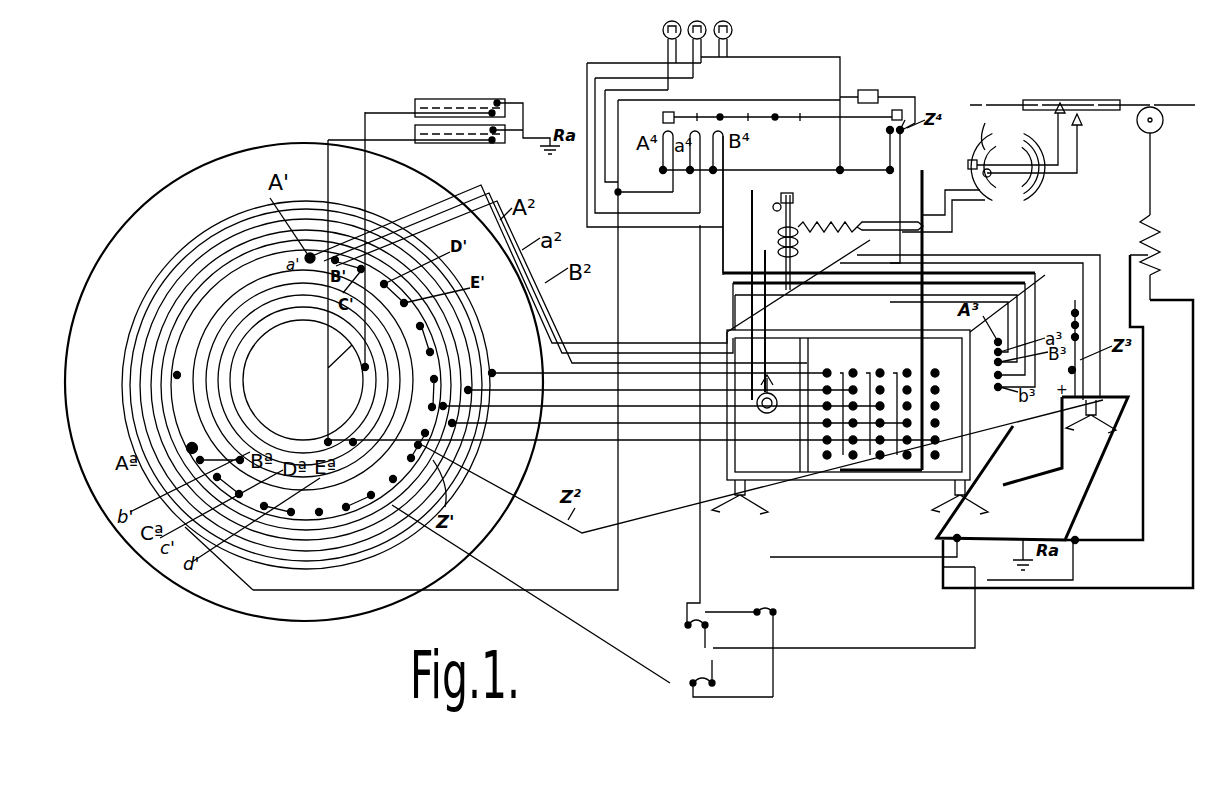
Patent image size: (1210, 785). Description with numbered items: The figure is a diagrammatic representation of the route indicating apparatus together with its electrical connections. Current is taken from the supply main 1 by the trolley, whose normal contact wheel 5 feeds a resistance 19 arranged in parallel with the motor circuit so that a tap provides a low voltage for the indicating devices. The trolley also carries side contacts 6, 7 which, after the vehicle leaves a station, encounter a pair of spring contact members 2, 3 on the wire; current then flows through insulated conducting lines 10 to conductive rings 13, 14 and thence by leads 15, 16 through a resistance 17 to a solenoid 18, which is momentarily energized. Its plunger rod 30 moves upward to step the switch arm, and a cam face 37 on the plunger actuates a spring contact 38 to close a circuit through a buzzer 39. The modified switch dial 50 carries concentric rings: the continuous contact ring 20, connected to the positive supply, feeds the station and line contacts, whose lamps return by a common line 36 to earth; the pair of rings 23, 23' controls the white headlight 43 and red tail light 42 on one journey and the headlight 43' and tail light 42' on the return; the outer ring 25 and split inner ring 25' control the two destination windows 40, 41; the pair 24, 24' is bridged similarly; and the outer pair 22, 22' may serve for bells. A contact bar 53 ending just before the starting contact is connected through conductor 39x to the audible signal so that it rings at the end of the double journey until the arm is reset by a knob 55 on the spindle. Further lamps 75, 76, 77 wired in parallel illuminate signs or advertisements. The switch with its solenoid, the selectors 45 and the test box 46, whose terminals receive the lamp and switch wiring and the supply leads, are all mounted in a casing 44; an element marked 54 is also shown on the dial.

The supply main 1 is at (1125, 105).
The spring contact member 2 is at (1040, 112).
The spring contact member 3 is at (1034, 98).
The contact wheel 5 is at (1152, 194).
The side contact 6 is at (1064, 103).
The side contact 7 is at (1083, 123).
The insulated conducting line 10 is at (1068, 150).
The conductive ring 13 is at (993, 145).
The conductive ring 14 is at (996, 132).
The lead 15 is at (962, 195).
The lead 16 is at (968, 208).
The resistance 17 is at (838, 232).
The solenoid 18 is at (797, 242).
The resistance 19 is at (1160, 264).
The continuous contact ring 20 is at (318, 515).
The outer ring 22 is at (306, 379).
The split outer ring 22' is at (306, 385).
The contact ring 23 is at (292, 385).
The split contact ring 23' is at (308, 385).
The contact ring 24 is at (303, 380).
The segment ring 24' is at (303, 380).
The outer ring 25 is at (303, 380).
The inner split ring 25' is at (303, 380).
The plunger rod 30 is at (795, 212).
The common line 36 is at (790, 172).
The cam face 37 is at (794, 198).
The spring contact 38 is at (774, 206).
The buzzer 39 is at (870, 95).
The conductor 39x is at (352, 620).
The destination indicator window 40 is at (447, 101).
The destination indicator window 41 is at (483, 143).
The red tail light 42 is at (679, 637).
The red tail light 42' is at (792, 694).
The white headlight 43 is at (767, 649).
The white headlight 43' is at (706, 688).
The casing 44 is at (1030, 258).
The selectors 45 is at (840, 458).
The test box 46 is at (1080, 384).
The modified switch dial 50 is at (200, 172).
The contact bar 53 is at (190, 317).
The contact 54 is at (188, 447).
The knob 55 is at (760, 396).
The lamp 75 is at (662, 31).
The lamp 76 is at (700, 14).
The lamp 77 is at (733, 28).